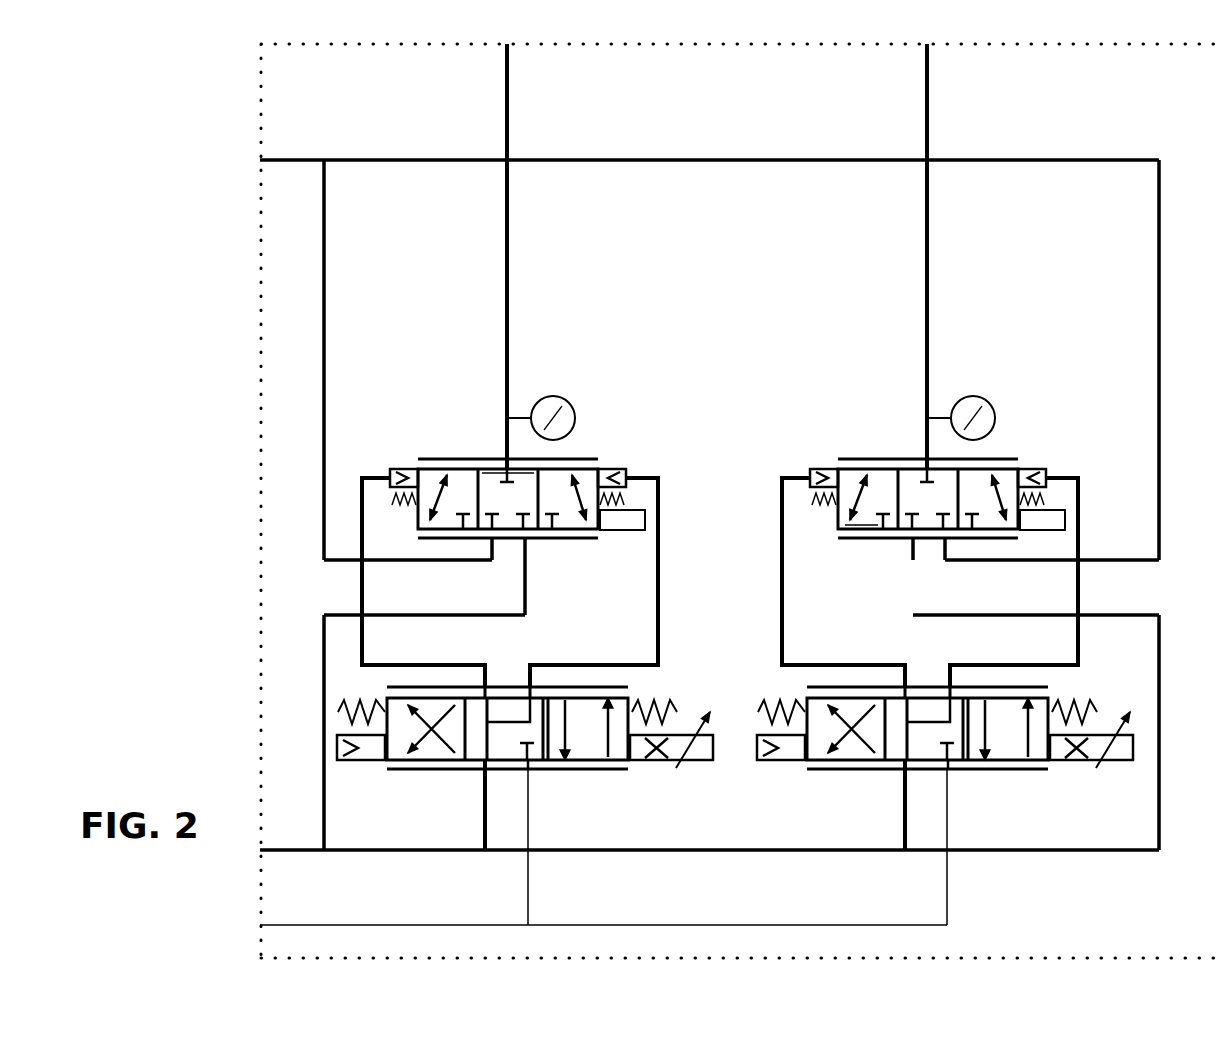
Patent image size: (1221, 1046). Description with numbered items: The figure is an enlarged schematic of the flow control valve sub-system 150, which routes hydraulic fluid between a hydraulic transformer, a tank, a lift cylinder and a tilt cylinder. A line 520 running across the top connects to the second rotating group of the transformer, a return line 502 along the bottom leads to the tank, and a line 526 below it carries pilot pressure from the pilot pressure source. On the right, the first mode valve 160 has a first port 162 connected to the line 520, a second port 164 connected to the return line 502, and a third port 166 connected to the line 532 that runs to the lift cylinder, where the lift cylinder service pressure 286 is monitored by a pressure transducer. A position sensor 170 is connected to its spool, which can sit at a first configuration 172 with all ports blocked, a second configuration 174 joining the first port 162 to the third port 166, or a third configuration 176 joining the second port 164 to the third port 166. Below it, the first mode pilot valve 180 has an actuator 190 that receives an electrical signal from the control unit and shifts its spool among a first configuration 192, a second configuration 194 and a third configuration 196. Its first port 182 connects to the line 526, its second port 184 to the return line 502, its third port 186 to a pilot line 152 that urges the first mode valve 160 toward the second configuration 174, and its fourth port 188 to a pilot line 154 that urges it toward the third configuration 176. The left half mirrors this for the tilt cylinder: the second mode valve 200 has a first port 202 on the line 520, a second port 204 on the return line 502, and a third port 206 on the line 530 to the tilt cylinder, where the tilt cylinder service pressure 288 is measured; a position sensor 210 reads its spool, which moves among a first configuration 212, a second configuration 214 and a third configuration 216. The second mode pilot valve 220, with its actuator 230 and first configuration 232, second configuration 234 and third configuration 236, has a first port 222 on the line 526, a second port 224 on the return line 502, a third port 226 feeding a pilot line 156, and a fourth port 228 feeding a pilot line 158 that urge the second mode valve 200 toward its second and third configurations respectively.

The flow control valve sub-system 150 is at (1112, 908).
The pilot line 152 is at (1080, 600).
The pilot line 154 is at (782, 590).
The pilot line 156 is at (362, 583).
The pilot line 158 is at (660, 592).
The first mode valve 160 is at (826, 520).
The first port 162 is at (935, 545).
The second port 164 is at (905, 540).
The third port 166 is at (907, 470).
The position sensor 170 is at (1048, 532).
The first configuration 172 is at (916, 482).
The second configuration 174 is at (1005, 477).
The third configuration 176 is at (860, 540).
The first mode pilot valve 180 is at (852, 778).
The first port 182 is at (950, 772).
The second port 184 is at (905, 772).
The third port 186 is at (945, 685).
The fourth port 188 is at (906, 685).
The actuator 190 is at (1072, 760).
The first configuration 192 is at (923, 685).
The second configuration 194 is at (1012, 752).
The third configuration 196 is at (840, 756).
The second mode valve 200 is at (594, 552).
The first port 202 is at (495, 545).
The second port 204 is at (527, 545).
The third port 206 is at (515, 467).
The position sensor 210 is at (637, 532).
The first configuration 212 is at (525, 474).
The second configuration 214 is at (430, 468).
The third configuration 216 is at (588, 477).
The second mode pilot valve 220 is at (432, 778).
The first port 222 is at (530, 772).
The second port 224 is at (485, 772).
The third port 226 is at (486, 685).
The fourth port 228 is at (523, 685).
The actuator 230 is at (652, 760).
The first configuration 232 is at (503, 685).
The second configuration 234 is at (420, 756).
The third configuration 236 is at (592, 752).
The lift cylinder service pressure 286 is at (990, 400).
The tilt cylinder service pressure 288 is at (570, 400).
The return line 502 is at (645, 850).
The line 520 is at (770, 160).
The line 526 is at (675, 925).
The line 530 is at (507, 307).
The line 532 is at (927, 290).